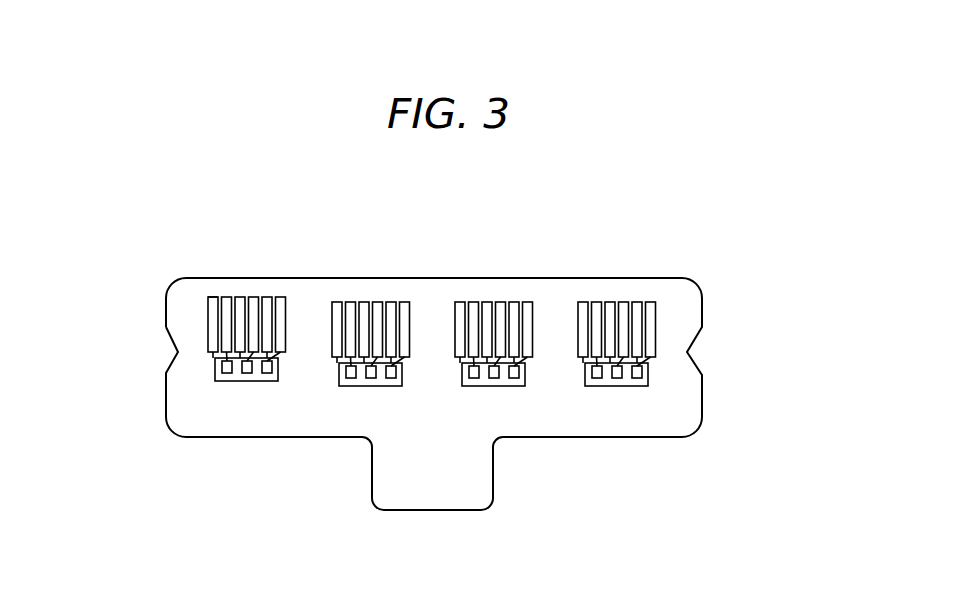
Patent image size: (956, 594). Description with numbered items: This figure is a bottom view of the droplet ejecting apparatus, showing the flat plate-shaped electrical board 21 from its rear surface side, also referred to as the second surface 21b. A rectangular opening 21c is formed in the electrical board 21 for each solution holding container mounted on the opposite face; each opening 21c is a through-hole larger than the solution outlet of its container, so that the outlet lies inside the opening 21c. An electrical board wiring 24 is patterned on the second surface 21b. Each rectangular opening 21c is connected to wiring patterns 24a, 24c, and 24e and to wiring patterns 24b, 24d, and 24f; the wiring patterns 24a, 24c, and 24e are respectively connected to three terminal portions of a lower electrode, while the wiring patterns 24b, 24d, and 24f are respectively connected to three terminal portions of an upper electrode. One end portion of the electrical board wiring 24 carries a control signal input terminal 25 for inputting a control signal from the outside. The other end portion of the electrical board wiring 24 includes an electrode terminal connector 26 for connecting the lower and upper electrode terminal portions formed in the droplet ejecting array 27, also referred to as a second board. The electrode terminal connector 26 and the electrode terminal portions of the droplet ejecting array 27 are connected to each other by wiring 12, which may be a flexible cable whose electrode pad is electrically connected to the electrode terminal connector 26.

The wiring 12 is at (215, 358).
The electrical board 21 is at (690, 405).
The second surface 21b is at (690, 299).
The rectangular opening 21c is at (233, 383).
The electrical board wiring 24 is at (231, 279).
The wiring pattern 24a is at (282, 297).
The wiring pattern 24b is at (268, 297).
The wiring pattern 24c is at (253, 297).
The wiring pattern 24d is at (241, 297).
The wiring pattern 24e is at (228, 297).
The wiring pattern 24f is at (212, 297).
The control signal input terminal 25 is at (210, 298).
The electrode terminal connector 26 is at (210, 351).
The droplet ejecting array 27 is at (247, 382).